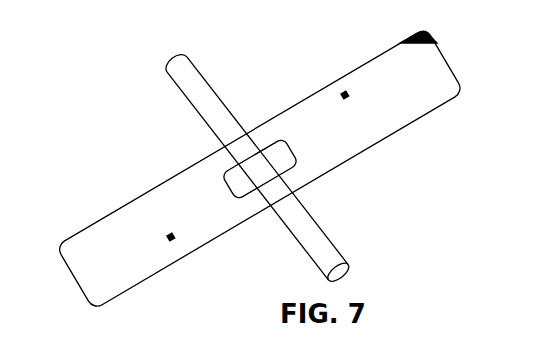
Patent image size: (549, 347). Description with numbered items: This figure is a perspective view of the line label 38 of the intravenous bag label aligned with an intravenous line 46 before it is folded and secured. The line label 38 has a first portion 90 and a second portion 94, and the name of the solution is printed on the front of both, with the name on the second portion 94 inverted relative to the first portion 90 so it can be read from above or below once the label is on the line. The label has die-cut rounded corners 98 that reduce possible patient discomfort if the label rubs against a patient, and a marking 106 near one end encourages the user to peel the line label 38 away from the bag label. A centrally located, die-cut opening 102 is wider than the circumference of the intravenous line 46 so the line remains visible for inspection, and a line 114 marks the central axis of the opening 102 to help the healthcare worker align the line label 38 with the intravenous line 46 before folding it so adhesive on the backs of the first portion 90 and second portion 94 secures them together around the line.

The line label 38 is at (270, 63).
The intravenous line 46 is at (221, 113).
The first portion 90 is at (260, 169).
The second portion 94 is at (370, 146).
The rounded corners 98 is at (56, 244).
The opening 102 is at (243, 192).
The marking 106 is at (440, 43).
The line 114 is at (281, 184).